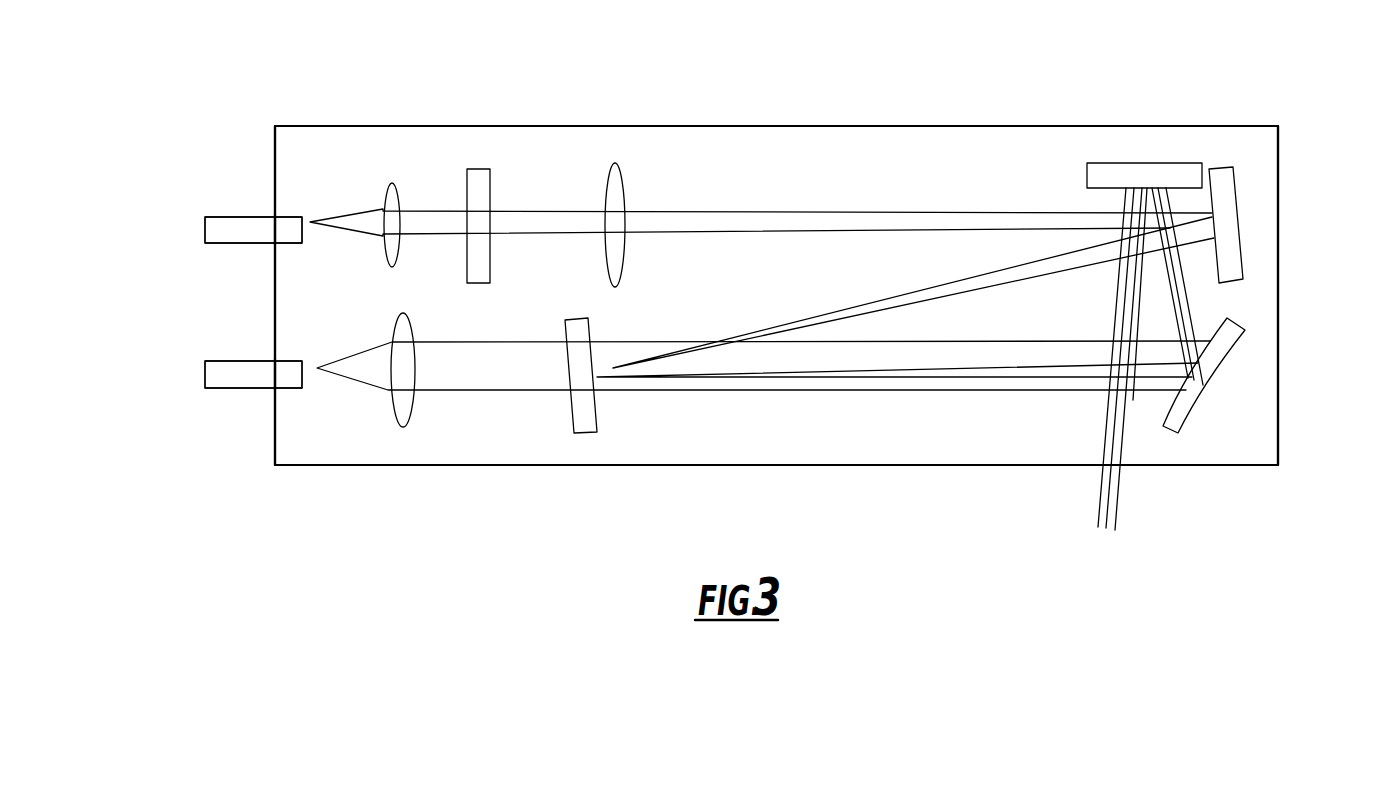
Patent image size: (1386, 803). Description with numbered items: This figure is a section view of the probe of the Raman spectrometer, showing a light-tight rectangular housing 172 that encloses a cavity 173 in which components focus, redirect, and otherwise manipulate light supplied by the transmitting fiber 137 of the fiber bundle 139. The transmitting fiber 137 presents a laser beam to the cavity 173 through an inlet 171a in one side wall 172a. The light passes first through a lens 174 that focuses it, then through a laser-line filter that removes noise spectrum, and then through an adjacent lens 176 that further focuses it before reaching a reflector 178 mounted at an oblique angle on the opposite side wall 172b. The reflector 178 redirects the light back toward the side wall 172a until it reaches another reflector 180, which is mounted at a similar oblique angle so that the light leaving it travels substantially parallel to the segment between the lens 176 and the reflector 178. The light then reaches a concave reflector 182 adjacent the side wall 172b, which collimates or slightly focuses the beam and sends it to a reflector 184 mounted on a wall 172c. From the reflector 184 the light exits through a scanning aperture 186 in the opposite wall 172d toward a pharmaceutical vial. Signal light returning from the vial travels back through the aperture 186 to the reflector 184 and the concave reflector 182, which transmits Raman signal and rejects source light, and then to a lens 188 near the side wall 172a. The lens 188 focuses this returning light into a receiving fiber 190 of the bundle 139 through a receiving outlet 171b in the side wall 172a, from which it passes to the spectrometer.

The transmitting fiber 137 is at (225, 232).
The fiber bundle 139 is at (190, 232).
The inlet 171a is at (264, 210).
The receiving outlet 171b is at (265, 405).
The housing 172 is at (332, 98).
The side wall 172a is at (275, 181).
The opposite side wall 172b is at (1278, 299).
The wall 172c is at (478, 169).
The wall 172d is at (660, 468).
The cavity 173 is at (800, 172).
The lens 174 is at (393, 183).
The lens 176 is at (616, 163).
The reflector 178 is at (1222, 219).
The reflector 180 is at (578, 410).
The concave reflector 182 is at (1232, 333).
The reflector 184 is at (1137, 172).
The scanning aperture 186 is at (1120, 467).
The lens 188 is at (403, 407).
The receiving fiber 190 is at (235, 377).